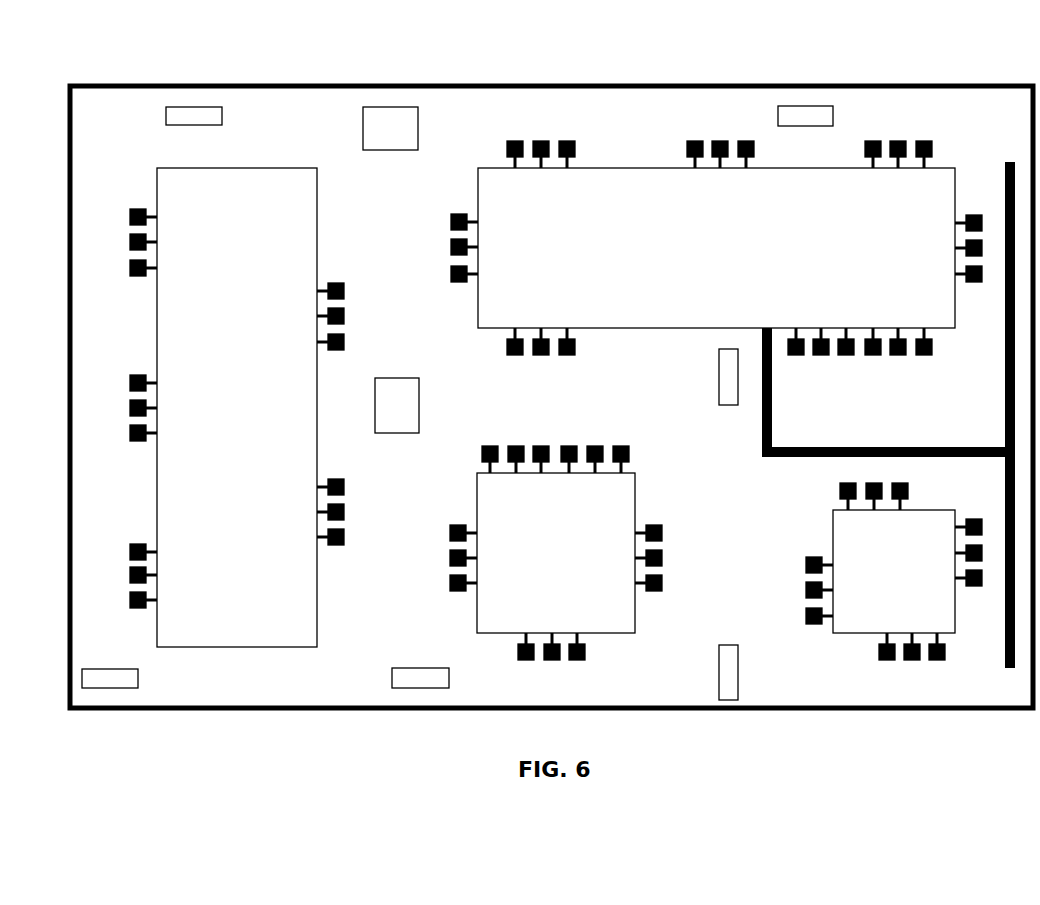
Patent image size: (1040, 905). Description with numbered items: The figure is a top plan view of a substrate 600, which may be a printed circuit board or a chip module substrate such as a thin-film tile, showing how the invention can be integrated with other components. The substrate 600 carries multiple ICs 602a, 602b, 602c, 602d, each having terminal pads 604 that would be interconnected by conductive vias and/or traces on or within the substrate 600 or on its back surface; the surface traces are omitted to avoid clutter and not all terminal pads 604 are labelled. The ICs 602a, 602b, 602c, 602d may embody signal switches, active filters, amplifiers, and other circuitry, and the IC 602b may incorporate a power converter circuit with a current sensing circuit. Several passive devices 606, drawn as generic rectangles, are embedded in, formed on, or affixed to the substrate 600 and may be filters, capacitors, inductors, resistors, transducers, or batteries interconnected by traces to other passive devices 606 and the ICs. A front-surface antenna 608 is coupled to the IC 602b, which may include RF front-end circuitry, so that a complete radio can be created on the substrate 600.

The substrate 600 is at (593, 86).
The IC 602a is at (157, 168).
The IC 602b is at (657, 168).
The IC 602c is at (477, 507).
The IC 602d is at (833, 538).
The terminal pads 604 is at (449, 224).
The passive devices 606 is at (222, 116).
The front-surface antenna 608 is at (935, 447).